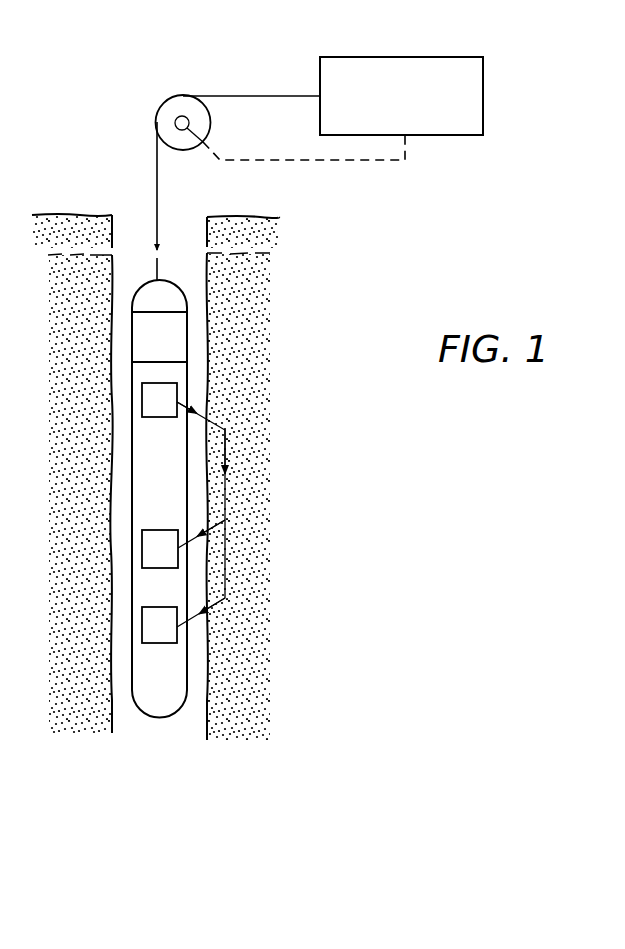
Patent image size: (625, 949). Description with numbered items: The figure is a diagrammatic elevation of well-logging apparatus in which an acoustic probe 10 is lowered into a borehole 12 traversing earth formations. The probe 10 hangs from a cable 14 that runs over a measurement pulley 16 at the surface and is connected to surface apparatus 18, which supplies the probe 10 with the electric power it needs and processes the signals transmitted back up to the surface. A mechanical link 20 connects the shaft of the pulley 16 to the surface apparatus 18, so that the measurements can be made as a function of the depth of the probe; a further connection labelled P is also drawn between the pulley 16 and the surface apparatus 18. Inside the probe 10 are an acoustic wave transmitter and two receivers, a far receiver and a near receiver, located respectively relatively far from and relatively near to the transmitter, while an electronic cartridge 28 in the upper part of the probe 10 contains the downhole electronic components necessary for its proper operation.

The acoustic probe 10 is at (127, 478).
The borehole 12 is at (202, 358).
The cable 14 is at (155, 176).
The measurement pulley 16 is at (170, 97).
The surface apparatus 18 is at (388, 57).
The mechanical link 20 is at (361, 163).
The electronic cartridge 28 is at (177, 328).
The pulse signal connection P is at (285, 163).